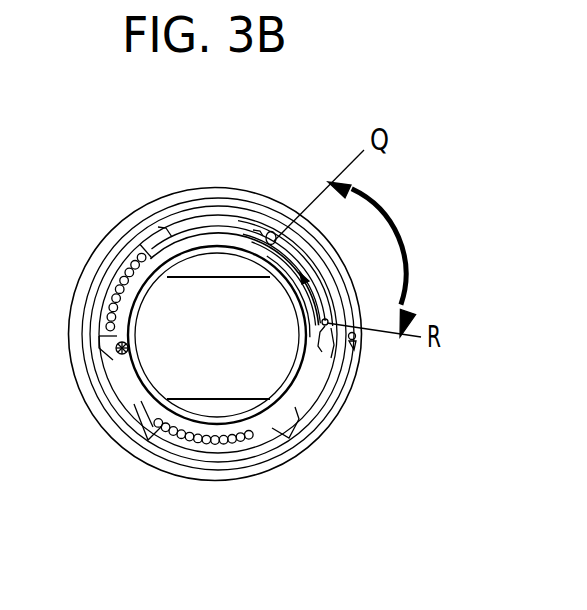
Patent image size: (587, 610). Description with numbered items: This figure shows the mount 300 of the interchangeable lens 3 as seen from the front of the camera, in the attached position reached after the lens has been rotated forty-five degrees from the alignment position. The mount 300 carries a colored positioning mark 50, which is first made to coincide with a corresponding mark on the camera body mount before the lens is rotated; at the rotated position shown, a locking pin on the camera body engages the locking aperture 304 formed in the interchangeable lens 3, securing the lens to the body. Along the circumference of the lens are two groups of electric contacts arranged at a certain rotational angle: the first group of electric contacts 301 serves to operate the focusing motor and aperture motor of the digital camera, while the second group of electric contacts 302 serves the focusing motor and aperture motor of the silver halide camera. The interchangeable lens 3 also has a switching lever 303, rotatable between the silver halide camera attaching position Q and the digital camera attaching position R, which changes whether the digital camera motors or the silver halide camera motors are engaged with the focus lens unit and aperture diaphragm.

The interchangeable lens 3 is at (214, 183).
The mount 300 is at (177, 254).
The first group of electric contacts 301 is at (115, 268).
The second group of electric contacts 302 is at (203, 446).
The switching lever 303 is at (271, 231).
The locking aperture 304 is at (355, 340).
The positioning mark 50 is at (118, 352).